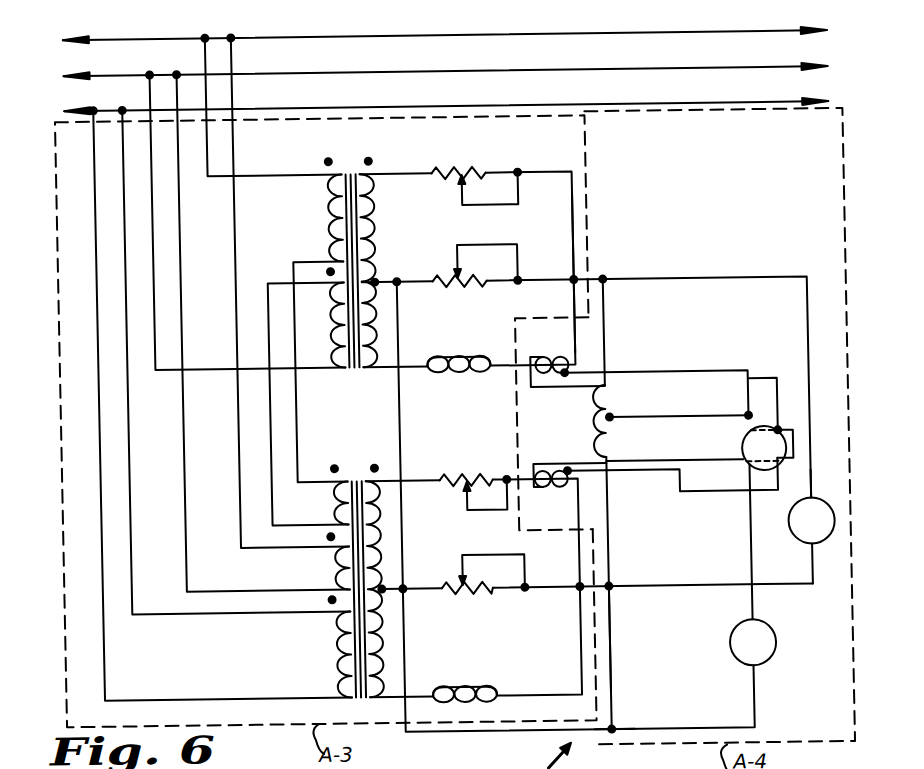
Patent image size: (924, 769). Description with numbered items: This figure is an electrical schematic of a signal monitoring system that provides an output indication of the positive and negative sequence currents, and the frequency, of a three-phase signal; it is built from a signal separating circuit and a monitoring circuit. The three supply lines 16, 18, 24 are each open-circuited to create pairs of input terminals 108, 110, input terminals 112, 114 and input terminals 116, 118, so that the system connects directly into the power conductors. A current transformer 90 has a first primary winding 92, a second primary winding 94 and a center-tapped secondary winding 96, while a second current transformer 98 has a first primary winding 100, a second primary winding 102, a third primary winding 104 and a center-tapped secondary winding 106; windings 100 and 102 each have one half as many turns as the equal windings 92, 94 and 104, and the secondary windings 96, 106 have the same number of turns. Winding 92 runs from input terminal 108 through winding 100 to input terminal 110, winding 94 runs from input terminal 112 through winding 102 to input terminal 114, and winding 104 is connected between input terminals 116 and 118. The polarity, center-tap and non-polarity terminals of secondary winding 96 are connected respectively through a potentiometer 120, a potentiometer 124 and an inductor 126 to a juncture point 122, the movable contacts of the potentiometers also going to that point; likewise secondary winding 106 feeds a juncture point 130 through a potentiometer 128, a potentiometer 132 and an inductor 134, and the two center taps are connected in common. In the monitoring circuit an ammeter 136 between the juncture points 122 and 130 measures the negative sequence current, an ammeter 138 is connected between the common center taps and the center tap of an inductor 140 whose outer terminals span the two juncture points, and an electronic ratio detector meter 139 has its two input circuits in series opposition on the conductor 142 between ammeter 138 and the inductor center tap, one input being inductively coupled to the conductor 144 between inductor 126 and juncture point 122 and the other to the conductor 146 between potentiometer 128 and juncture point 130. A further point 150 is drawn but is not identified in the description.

The supply line 16 is at (397, 41).
The supply line 18 is at (397, 77).
The supply line 24 is at (397, 112).
The current transformer 90 is at (376, 142).
The first primary winding 92 is at (318, 243).
The second primary winding 94 is at (320, 351).
The center-tapped secondary winding 96 is at (372, 244).
The second current transformer 98 is at (341, 468).
The first primary winding 100 is at (312, 524).
The second primary winding 102 is at (308, 589).
The third primary winding 104 is at (312, 676).
The center-tapped secondary winding 106 is at (370, 553).
The input terminal 108 is at (212, 28).
The input terminal 110 is at (230, 40).
The input terminal 112 is at (148, 76).
The input terminal 114 is at (190, 64).
The input terminal 116 is at (91, 111).
The input terminal 118 is at (140, 96).
The potentiometer 120 is at (460, 178).
The juncture point 122 is at (570, 281).
The potentiometer 124 is at (462, 292).
The inductor 126 is at (436, 364).
The potentiometer 128 is at (456, 468).
The juncture point 130 is at (632, 642).
The potentiometer 132 is at (450, 606).
The inductor 134 is at (431, 696).
The ammeter 136 is at (810, 572).
The ammeter 138 is at (757, 668).
The electronic ratio detector meter 139 is at (733, 468).
The inductor 140 is at (606, 415).
The conductor 142 is at (740, 582).
The conductor 144 is at (580, 348).
The conductor 146 is at (582, 522).
The junction 150 is at (597, 736).